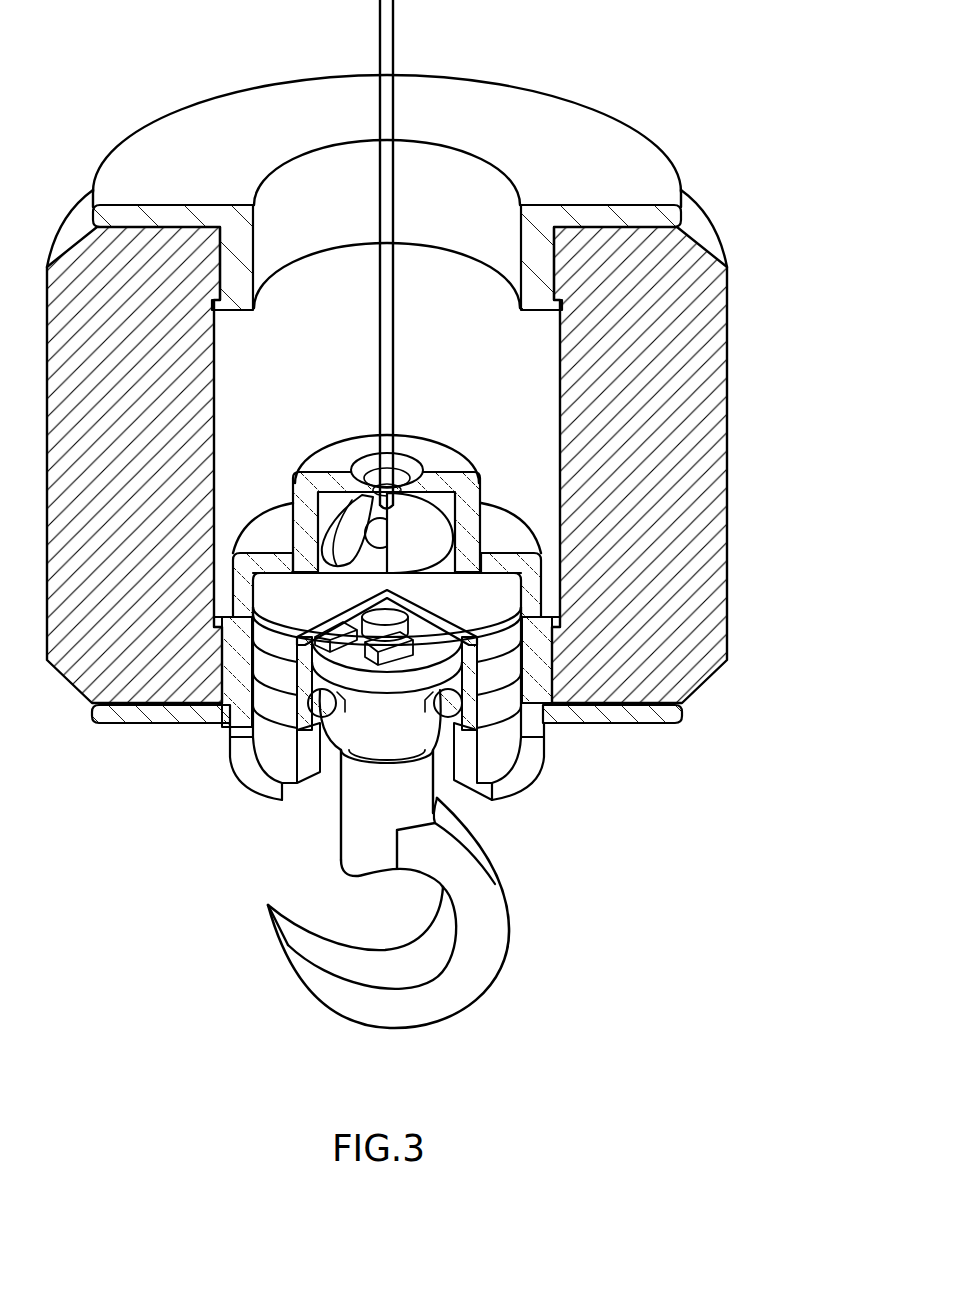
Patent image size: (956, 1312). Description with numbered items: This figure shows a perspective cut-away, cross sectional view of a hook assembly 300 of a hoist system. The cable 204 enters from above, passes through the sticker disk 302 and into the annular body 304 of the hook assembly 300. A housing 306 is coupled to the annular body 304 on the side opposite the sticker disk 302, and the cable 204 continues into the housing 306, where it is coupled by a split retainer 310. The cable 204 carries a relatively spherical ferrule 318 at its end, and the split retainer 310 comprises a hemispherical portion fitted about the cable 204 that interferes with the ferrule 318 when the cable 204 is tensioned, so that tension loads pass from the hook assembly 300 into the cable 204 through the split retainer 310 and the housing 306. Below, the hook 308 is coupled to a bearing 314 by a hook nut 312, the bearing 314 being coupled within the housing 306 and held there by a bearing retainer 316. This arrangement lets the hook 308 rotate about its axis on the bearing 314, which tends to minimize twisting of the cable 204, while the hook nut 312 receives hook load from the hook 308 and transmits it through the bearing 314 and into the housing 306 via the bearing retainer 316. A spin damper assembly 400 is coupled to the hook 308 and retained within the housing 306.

The cable 204 is at (390, 17).
The hook assembly 300 is at (769, 201).
The sticker disk 302 is at (650, 172).
The annular body 304 is at (700, 440).
The housing 306 is at (468, 510).
The hook 308 is at (487, 888).
The split retainer 310 is at (413, 515).
The hook nut 312 is at (350, 727).
The bearing 314 is at (273, 702).
The bearing retainer 316 is at (517, 780).
The ferrule 318 is at (377, 527).
The spin damper assembly 400 is at (538, 694).